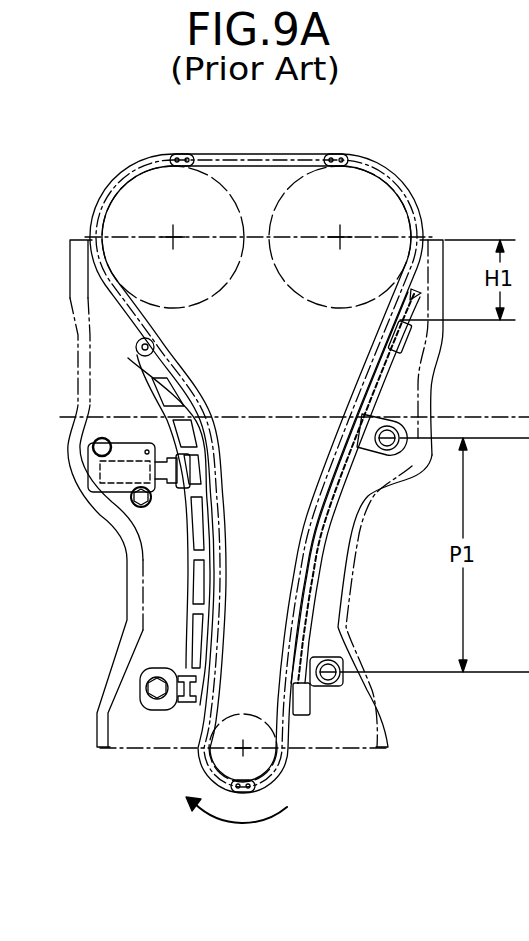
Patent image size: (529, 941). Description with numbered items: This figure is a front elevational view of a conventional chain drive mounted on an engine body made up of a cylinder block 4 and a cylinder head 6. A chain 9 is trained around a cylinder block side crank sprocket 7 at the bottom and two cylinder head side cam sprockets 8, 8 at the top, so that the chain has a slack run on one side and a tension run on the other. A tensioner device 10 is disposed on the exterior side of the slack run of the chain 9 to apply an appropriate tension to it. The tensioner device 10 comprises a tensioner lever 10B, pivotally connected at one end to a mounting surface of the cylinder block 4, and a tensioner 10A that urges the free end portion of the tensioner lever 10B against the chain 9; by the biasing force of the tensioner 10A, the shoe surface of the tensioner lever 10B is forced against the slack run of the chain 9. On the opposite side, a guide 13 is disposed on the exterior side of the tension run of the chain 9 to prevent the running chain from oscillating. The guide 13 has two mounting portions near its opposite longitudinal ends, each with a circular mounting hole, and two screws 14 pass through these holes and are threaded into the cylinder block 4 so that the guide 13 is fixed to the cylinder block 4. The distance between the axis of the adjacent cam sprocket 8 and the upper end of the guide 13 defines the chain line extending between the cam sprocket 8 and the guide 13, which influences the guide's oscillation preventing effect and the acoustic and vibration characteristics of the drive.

The cylinder block 4 is at (100, 690).
The cylinder head 6 is at (70, 292).
The cylinder block side sprocket (crank sprocket) 7 is at (258, 760).
The cylinder head side sprocket (cam sprocket) 8 is at (137, 198).
The chain 9 is at (384, 175).
The tensioner device 10 is at (113, 524).
The tensioner 10A is at (112, 494).
The tensioner lever 10B is at (186, 590).
The guide 13 is at (320, 578).
The screw 14 is at (392, 452).